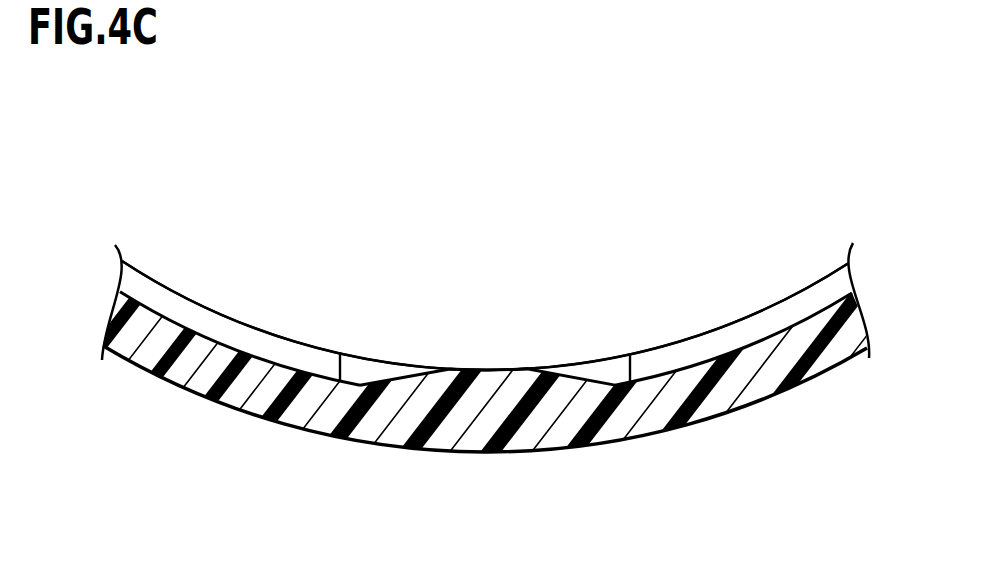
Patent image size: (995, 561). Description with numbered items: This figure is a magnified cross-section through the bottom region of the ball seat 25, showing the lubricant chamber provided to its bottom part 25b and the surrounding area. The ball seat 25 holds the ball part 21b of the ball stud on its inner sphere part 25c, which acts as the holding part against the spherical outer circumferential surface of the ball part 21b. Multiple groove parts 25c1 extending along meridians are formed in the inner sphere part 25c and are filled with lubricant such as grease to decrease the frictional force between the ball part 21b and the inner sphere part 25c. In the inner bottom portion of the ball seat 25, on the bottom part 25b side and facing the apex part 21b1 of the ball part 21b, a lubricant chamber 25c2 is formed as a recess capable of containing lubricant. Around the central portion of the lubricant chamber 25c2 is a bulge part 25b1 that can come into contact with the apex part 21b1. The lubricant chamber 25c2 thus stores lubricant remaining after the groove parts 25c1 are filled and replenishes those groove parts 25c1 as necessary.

The ball seat 25 is at (496, 366).
The bottom part 25b is at (485, 453).
The bulge part 25b1 is at (483, 387).
The inner sphere part (holding part) 25c is at (485, 342).
The groove parts 25c1 is at (213, 310).
The lubricant chamber 25c2 is at (603, 370).
The ball part 21b is at (525, 257).
The apex part 21b1 is at (487, 368).